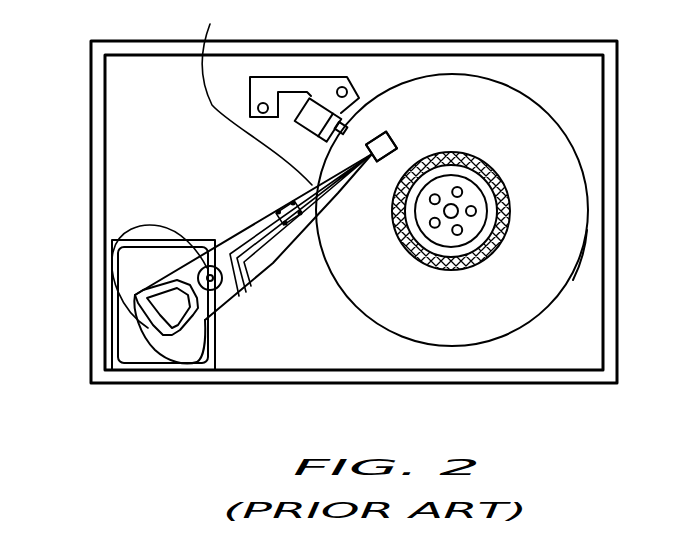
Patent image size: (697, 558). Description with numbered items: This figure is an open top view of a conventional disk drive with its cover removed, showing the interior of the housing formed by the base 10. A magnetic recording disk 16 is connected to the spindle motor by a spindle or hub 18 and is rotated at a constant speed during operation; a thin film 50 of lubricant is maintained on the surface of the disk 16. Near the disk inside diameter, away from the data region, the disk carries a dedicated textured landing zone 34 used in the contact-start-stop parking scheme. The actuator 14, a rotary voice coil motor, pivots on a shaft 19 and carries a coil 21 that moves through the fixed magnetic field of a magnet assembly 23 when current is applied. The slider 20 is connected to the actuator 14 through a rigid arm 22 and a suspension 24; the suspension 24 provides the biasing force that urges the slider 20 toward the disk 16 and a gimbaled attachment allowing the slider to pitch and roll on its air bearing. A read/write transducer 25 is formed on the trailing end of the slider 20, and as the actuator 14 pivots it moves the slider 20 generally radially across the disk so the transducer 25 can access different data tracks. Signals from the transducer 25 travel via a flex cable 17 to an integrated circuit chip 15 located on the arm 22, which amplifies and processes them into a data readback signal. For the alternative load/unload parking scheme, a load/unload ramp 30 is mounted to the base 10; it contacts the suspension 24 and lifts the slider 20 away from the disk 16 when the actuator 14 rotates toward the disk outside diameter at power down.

The base 10 is at (615, 128).
The actuator 14 is at (131, 362).
The integrated circuit chip 15 is at (288, 197).
The magnetic recording disk 16 is at (573, 280).
The flex cable 17 is at (255, 93).
The spindle or hub 18 is at (476, 198).
The shaft 19 is at (113, 232).
The air-bearing slider 20 is at (387, 132).
The coil 21 is at (135, 296).
The rigid arm 22 is at (265, 265).
The magnet assembly 23 is at (148, 328).
The suspension 24 is at (318, 210).
The read/write head or transducer 25 is at (373, 164).
The load/unload ramp 30 is at (333, 100).
The textured landing zone 34 is at (507, 228).
The thin film of lubricant 50 is at (492, 92).